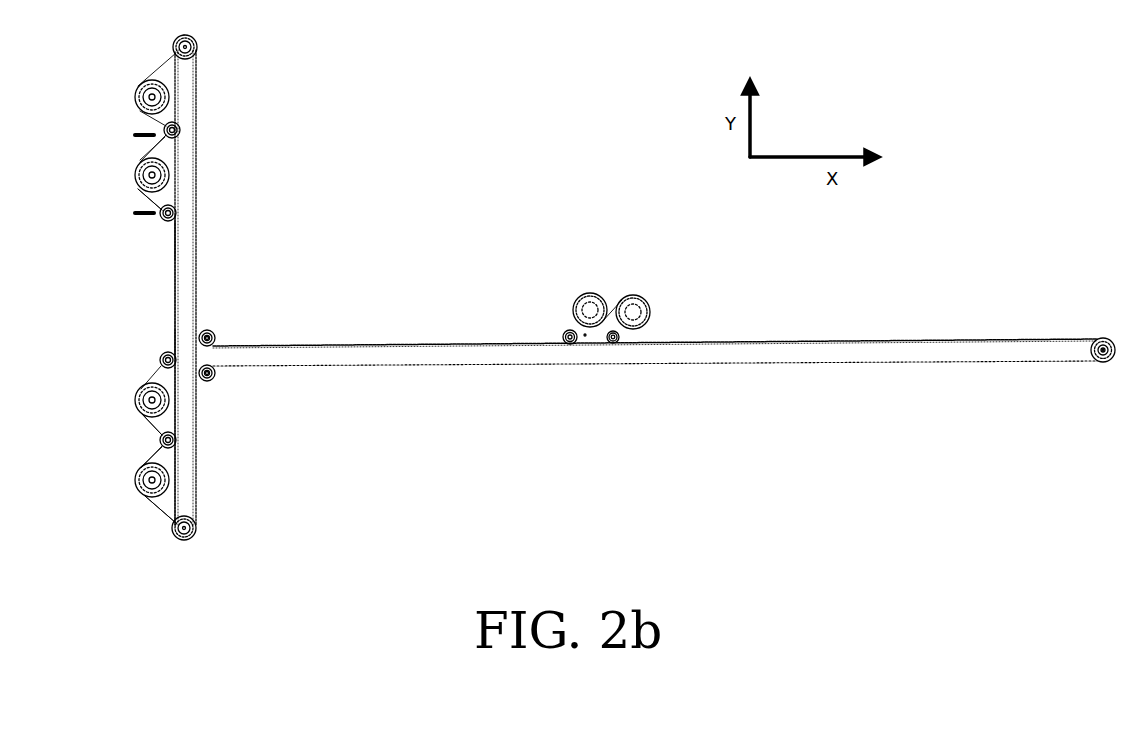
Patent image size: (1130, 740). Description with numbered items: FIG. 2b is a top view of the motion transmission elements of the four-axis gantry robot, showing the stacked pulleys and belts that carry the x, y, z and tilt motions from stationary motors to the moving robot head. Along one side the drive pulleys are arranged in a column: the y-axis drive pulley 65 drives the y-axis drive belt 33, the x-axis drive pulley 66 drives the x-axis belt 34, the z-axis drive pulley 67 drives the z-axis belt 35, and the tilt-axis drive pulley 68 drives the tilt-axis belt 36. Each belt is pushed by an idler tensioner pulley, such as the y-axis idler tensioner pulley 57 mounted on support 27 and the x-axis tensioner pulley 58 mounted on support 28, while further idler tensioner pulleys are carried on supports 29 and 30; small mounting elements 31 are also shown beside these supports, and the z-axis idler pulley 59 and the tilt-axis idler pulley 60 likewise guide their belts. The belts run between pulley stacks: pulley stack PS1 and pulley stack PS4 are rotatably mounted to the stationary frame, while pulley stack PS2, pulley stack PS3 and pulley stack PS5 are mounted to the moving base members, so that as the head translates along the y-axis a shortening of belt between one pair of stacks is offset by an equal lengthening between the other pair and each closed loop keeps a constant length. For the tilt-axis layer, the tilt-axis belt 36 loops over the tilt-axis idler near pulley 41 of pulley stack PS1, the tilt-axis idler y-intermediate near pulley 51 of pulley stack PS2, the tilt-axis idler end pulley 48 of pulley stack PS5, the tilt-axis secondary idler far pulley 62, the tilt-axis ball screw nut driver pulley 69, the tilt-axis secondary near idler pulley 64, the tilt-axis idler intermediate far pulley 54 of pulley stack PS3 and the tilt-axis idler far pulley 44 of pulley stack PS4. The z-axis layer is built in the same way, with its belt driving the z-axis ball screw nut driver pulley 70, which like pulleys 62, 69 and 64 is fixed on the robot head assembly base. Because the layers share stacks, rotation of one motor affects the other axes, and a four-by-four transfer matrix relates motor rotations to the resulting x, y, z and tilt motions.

The tilt-axis belt 36 is at (160, 61).
The tilt-axis drive pulley 68 is at (142, 85).
The tilt-axis idler pulley 60 is at (168, 127).
The z-axis belt 35 is at (150, 127).
The belt clamp 31 is at (138, 136).
The support 30 is at (150, 174).
The z-axis drive pulley 67 is at (142, 182).
The support 29 is at (162, 218).
The z-axis idler pulley 59 is at (160, 242).
The x-axis tensioner pulley 58 is at (160, 352).
The support 28 is at (155, 363).
The x-axis drive pulley 66 is at (150, 398).
The y-axis idler tensioner pulley 57 is at (160, 433).
The support 27 is at (155, 441).
The x-axis belt 34 is at (150, 480).
The y-axis drive pulley 65 is at (142, 487).
The y-axis drive belt 33 is at (157, 517).
The tilt-axis idler far pulley 44 is at (197, 40).
The pulley stack PS4 is at (218, 58).
The pulley stack PS3 is at (226, 309).
The tilt-axis idler intermediate far pulley 54 is at (213, 333).
The tilt-axis idler y-intermediate near pulley 51 is at (214, 376).
The pulley stack PS2 is at (223, 404).
The pulley stack PS1 is at (220, 522).
The tilt-axis idler near pulley 41 is at (197, 533).
The z-axis ball screw nut driver pulley 70 is at (582, 302).
The tilt-axis ball screw nut driver pulley 69 is at (638, 297).
The tilt-axis secondary near idler pulley 64 is at (570, 345).
The tilt-axis secondary idler far pulley 62 is at (618, 340).
The tilt-axis idler end pulley 48 is at (1096, 338).
The pulley stack PS5 is at (1090, 381).